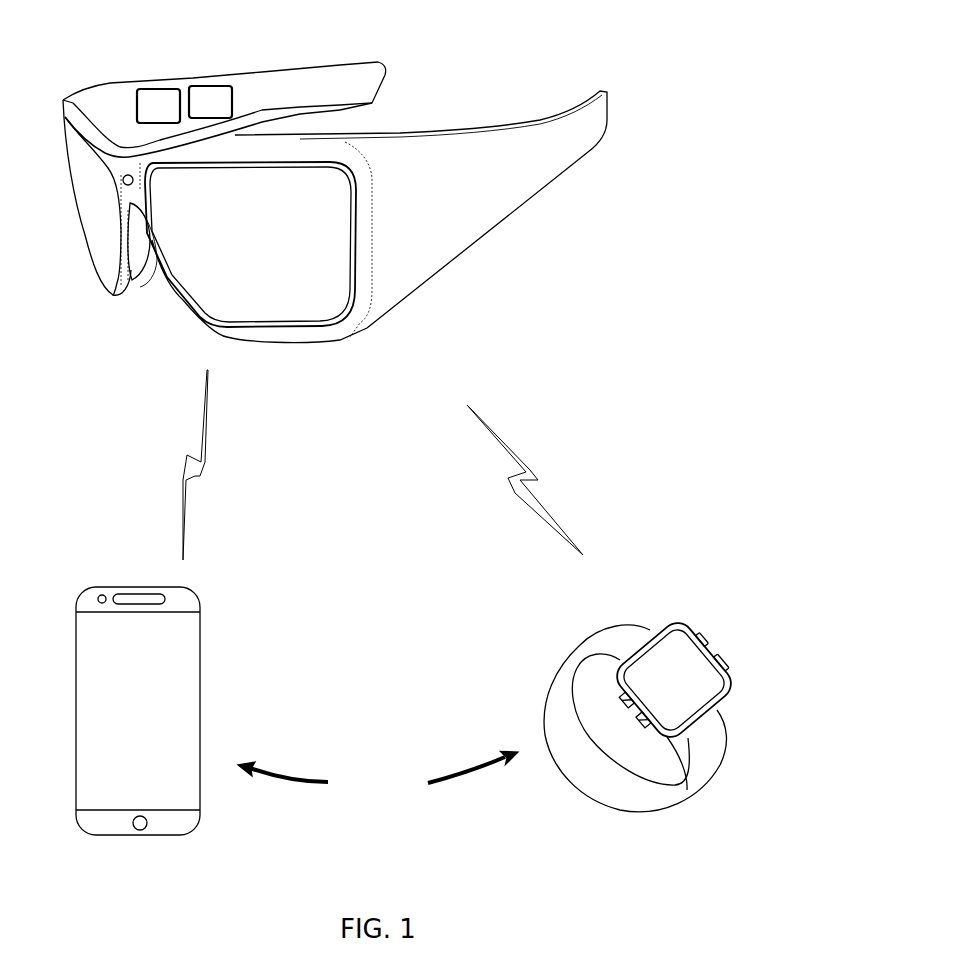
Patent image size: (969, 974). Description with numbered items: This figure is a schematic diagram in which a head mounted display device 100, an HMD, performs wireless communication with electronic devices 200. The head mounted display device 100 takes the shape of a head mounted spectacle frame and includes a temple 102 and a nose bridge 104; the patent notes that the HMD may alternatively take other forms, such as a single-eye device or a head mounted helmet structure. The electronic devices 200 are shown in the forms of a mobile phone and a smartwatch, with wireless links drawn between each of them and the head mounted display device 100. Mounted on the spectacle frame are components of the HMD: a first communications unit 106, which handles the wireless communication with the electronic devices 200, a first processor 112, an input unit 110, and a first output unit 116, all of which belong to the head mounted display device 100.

The head mounted display device 100 is at (331, 181).
The temple 102 is at (288, 95).
The nose bridge 104 is at (122, 150).
The first communications unit 106 is at (210, 99).
The input unit 110 is at (115, 186).
The first processor 112 is at (166, 110).
The first output unit 116 is at (92, 213).
The electronic devices 200 is at (378, 780).